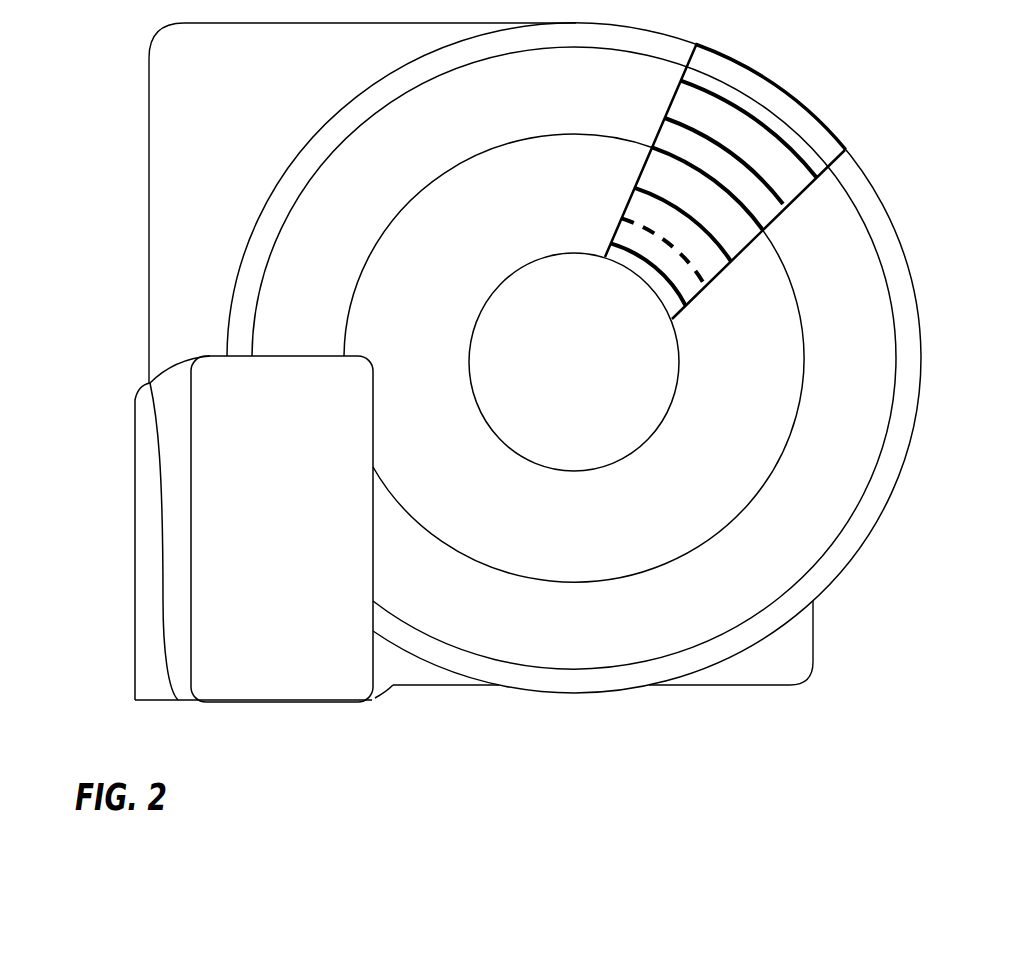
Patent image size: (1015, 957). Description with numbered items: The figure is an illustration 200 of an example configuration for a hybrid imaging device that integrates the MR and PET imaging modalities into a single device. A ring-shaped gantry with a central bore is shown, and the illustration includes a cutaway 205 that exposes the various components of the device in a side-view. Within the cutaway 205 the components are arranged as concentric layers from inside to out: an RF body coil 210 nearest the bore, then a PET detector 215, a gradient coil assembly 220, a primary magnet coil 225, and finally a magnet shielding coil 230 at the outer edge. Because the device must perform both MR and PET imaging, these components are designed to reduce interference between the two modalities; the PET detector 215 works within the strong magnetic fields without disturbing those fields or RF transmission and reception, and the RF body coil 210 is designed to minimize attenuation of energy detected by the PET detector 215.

The illustration 200 is at (949, 55).
The cutaway 205 is at (792, 93).
The RF body coil 210 is at (688, 306).
The PET detector 215 is at (621, 219).
The gradient coil assembly 220 is at (634, 188).
The primary magnet coil 225 is at (664, 118).
The magnet shielding coil 230 is at (680, 80).